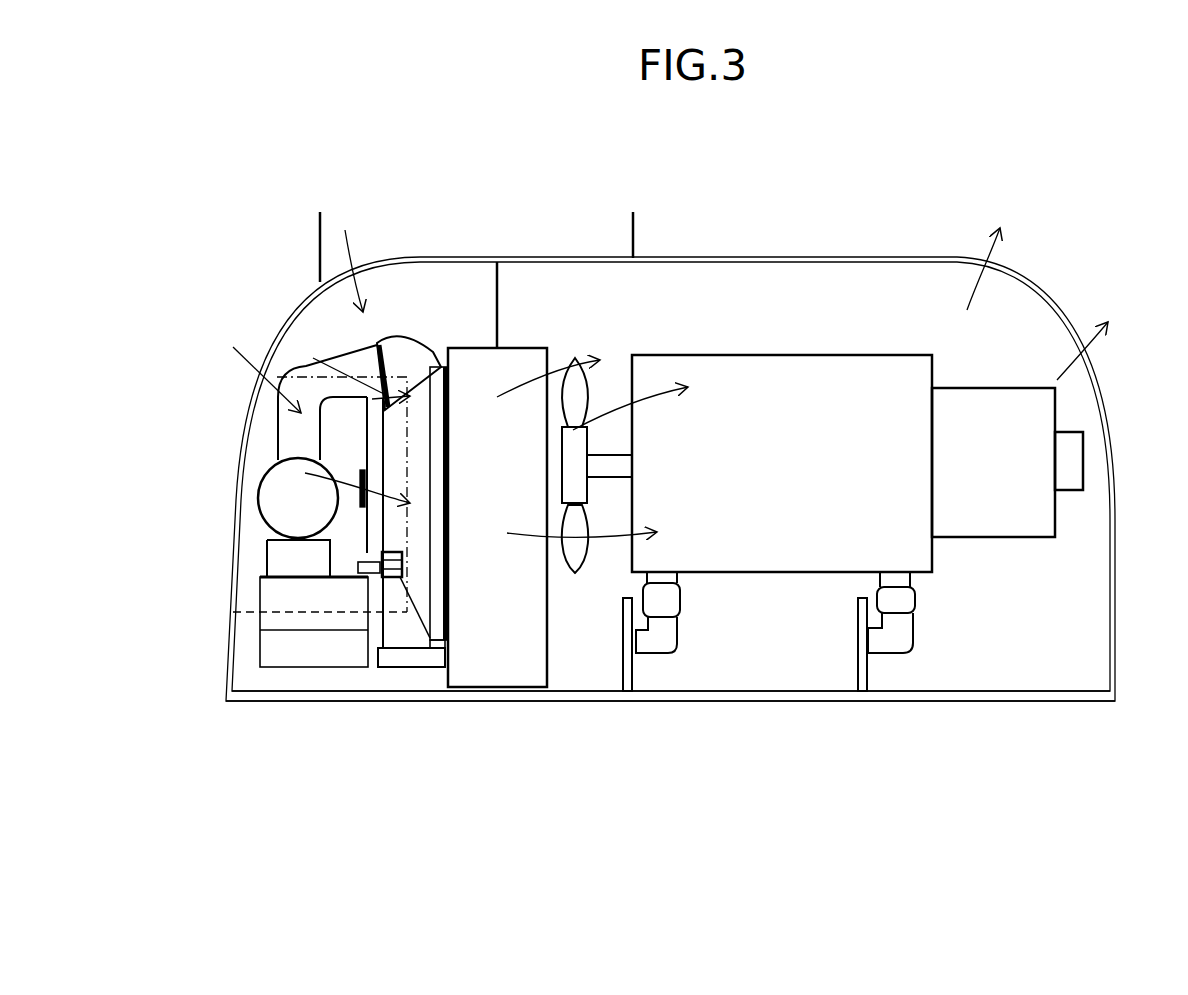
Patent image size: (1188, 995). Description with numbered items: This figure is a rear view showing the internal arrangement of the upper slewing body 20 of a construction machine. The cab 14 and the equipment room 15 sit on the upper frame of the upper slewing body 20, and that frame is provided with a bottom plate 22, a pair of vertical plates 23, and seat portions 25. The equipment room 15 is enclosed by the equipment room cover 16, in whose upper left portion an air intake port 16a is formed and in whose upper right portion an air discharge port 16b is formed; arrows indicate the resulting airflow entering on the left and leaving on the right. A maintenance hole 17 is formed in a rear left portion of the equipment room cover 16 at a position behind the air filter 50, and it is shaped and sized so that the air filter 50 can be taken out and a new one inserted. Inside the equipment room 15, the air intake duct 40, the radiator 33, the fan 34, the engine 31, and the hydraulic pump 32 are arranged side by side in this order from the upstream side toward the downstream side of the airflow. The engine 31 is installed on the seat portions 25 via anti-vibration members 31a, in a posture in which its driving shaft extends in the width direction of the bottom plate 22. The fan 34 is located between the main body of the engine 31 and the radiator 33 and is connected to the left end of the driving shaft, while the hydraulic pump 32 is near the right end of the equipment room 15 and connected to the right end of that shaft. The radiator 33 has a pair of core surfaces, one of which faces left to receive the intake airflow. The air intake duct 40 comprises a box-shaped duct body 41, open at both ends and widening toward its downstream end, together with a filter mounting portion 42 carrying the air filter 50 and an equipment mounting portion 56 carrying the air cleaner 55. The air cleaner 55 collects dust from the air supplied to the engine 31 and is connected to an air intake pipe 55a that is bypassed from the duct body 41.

The cab 14 is at (318, 231).
The equipment room 15 is at (889, 317).
The equipment room cover 16 is at (714, 257).
The air intake port 16a is at (363, 258).
The air discharge port 16b is at (1023, 273).
The maintenance hole 17 is at (248, 612).
The upper slewing body 20 is at (1066, 176).
The bottom plate 22 is at (1027, 701).
The vertical plates 23 is at (623, 683).
The seat portions 25 is at (680, 634).
The engine 31 is at (783, 355).
The anti-vibration members 31a is at (855, 595).
The hydraulic pump 32 is at (1018, 538).
The radiator 33 is at (497, 688).
The fan 34 is at (575, 357).
The air intake duct 40 is at (330, 337).
The duct body 41 is at (440, 365).
The filter mounting portion 42 is at (383, 652).
The air filter 50 is at (375, 582).
The air cleaner 55 is at (262, 494).
The air intake pipe 55a is at (280, 437).
The equipment mounting portion 56 is at (268, 557).